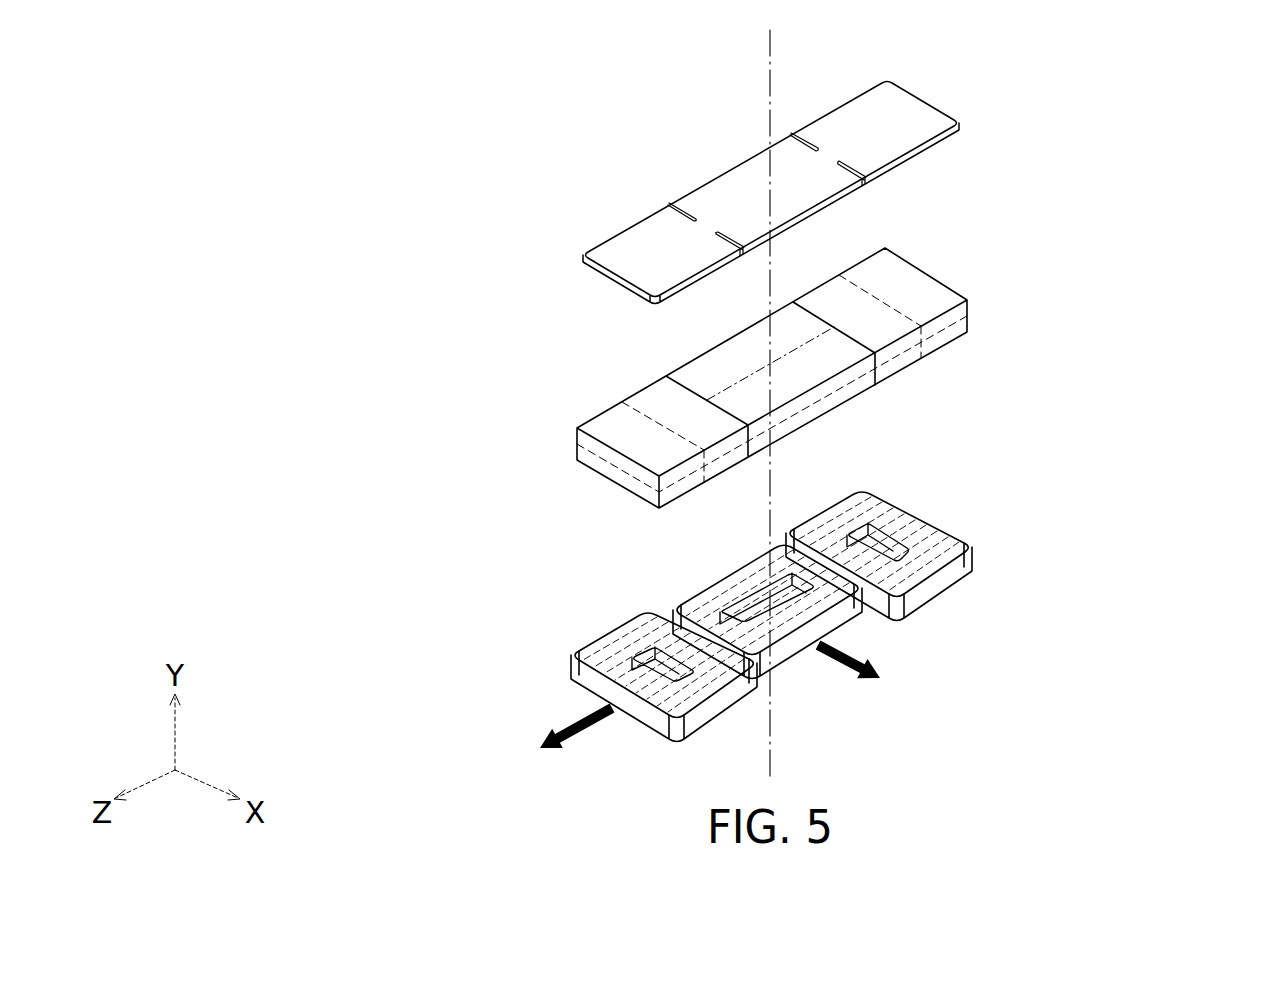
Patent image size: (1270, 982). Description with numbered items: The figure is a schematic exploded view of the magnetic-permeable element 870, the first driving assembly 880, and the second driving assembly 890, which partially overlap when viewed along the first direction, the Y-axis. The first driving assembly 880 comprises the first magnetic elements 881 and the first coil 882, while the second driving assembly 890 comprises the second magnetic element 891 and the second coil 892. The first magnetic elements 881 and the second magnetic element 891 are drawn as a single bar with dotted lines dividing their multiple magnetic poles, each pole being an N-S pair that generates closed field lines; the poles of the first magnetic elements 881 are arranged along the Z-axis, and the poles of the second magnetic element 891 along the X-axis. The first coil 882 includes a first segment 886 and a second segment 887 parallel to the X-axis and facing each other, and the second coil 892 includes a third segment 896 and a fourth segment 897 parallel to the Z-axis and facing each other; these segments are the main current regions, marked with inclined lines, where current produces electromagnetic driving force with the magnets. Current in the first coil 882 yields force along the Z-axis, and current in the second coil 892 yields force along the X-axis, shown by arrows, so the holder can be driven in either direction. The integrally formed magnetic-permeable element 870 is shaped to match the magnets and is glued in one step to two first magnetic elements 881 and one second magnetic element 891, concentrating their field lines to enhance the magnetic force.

The magnetic-permeable element 870 is at (895, 120).
The first driving assembly 880 is at (851, 515).
The first magnetic element 881 is at (618, 465).
The first coil 882 is at (742, 618).
The first segment 886 is at (592, 658).
The second segment 887 is at (716, 712).
The second driving assembly 890 is at (920, 523).
The second magnetic element 891 is at (718, 366).
The second coil 892 is at (771, 618).
The third segment 896 is at (748, 572).
The fourth segment 897 is at (680, 606).